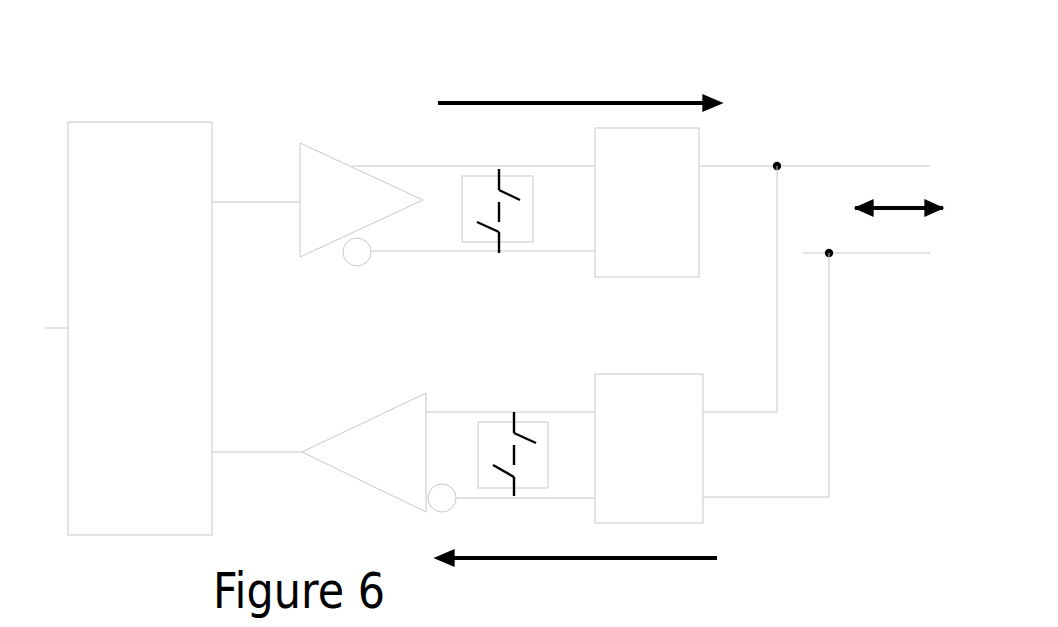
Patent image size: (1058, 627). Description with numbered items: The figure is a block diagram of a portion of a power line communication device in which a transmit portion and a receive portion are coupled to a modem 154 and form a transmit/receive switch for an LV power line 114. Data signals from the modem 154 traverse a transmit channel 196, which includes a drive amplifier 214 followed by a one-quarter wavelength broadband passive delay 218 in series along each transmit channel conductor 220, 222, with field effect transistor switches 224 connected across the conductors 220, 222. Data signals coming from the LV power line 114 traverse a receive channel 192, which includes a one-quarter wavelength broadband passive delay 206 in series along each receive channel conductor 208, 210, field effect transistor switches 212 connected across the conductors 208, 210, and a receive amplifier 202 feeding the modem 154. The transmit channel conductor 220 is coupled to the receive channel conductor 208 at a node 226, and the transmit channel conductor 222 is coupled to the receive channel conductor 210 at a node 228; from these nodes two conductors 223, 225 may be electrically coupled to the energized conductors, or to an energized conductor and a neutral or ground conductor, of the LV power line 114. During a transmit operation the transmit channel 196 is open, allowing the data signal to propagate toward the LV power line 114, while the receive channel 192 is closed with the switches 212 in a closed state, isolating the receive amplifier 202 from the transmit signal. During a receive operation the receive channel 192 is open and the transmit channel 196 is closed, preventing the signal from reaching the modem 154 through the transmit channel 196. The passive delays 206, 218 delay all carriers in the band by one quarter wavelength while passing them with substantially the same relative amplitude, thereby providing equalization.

The modem 154 is at (213, 322).
The drive amplifier 214 is at (332, 155).
The field effect transistor switches 224 is at (475, 173).
The one-quarter wavelength broadband passive delay 218 is at (702, 152).
The transmit channel conductor 222 is at (718, 252).
The transmit channel conductor 220 is at (758, 163).
The conductor 223 is at (862, 166).
The node 226 is at (777, 166).
The LV power line 114 is at (899, 223).
The conductor 225 is at (878, 253).
The node 228 is at (829, 253).
The transmit channel 196 is at (580, 90).
The receive channel 192 is at (576, 569).
The receive amplifier 202 is at (392, 407).
The field effect transistor switches 212 is at (492, 420).
The one-quarter wavelength broadband passive delay 206 is at (692, 523).
The receive channel conductor 208 is at (728, 412).
The receive channel conductor 210 is at (829, 453).